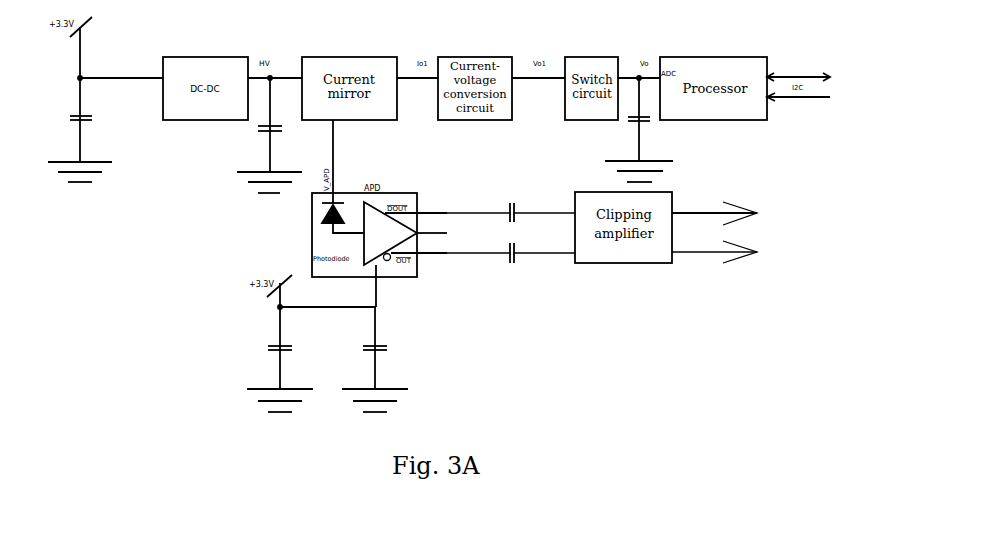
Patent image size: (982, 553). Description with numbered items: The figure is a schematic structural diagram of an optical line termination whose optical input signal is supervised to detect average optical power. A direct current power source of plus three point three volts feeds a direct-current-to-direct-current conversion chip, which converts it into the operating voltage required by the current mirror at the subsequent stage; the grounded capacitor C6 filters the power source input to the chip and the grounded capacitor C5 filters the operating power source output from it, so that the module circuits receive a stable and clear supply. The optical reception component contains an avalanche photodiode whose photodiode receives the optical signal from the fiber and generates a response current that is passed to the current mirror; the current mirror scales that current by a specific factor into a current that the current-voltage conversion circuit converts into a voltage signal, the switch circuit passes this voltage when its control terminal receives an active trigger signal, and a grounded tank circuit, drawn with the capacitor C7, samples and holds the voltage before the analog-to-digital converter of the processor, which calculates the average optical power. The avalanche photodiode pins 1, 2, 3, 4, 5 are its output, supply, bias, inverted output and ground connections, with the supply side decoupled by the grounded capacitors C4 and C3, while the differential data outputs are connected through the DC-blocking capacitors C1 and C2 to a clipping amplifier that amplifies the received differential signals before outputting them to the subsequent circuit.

The DC-blocking capacitor C1 is at (511, 212).
The DC-blocking capacitor C2 is at (511, 253).
The decoupling capacitor C3 is at (375, 359).
The decoupling capacitor C4 is at (280, 374).
The grounded capacitor C5 is at (269, 135).
The grounded capacitor C6 is at (80, 144).
The decoupling capacitor C7 is at (639, 130).
The OUT pin 1 is at (419, 257).
The Vcc pin 2 is at (378, 286).
The V_APD pin 3 is at (340, 161).
The OUT-bar pin 4 is at (416, 214).
The GND pin 5 is at (432, 235).